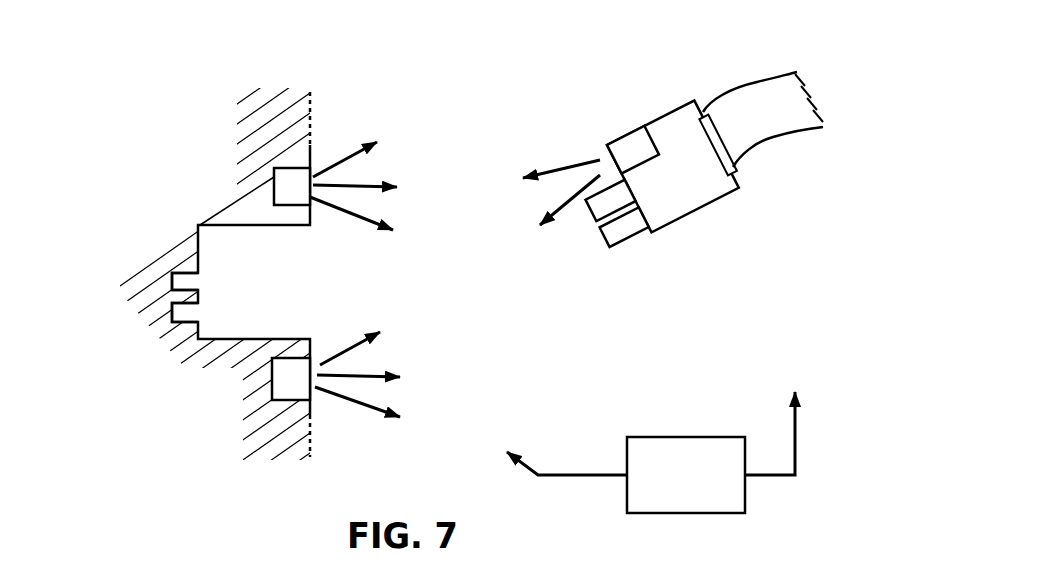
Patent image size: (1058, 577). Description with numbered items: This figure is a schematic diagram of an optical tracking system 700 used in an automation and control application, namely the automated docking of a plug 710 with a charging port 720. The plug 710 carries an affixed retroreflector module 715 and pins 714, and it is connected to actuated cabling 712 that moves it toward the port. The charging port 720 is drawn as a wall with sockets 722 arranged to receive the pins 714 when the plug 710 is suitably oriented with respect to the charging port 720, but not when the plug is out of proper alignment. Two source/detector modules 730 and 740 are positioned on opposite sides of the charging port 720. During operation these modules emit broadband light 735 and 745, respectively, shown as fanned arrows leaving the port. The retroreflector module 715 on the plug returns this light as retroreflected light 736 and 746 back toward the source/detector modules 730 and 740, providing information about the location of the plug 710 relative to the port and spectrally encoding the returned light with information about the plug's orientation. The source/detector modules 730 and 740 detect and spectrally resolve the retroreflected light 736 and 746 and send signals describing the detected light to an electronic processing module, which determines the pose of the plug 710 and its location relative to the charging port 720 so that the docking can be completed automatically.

The optical tracking system 700 is at (654, 266).
The plug 710 is at (702, 202).
The actuated cabling 712 is at (753, 92).
The pins 714 is at (588, 212).
The retroreflector module 715 is at (628, 145).
The charging port 720 is at (232, 325).
The sockets 722 is at (170, 282).
The source/detector module 730 is at (283, 383).
The broadband light 735 is at (361, 392).
The retroreflected light 736 is at (557, 210).
The source/detector module 740 is at (287, 190).
The broadband light 745 is at (355, 170).
The retroreflected light 746 is at (560, 167).